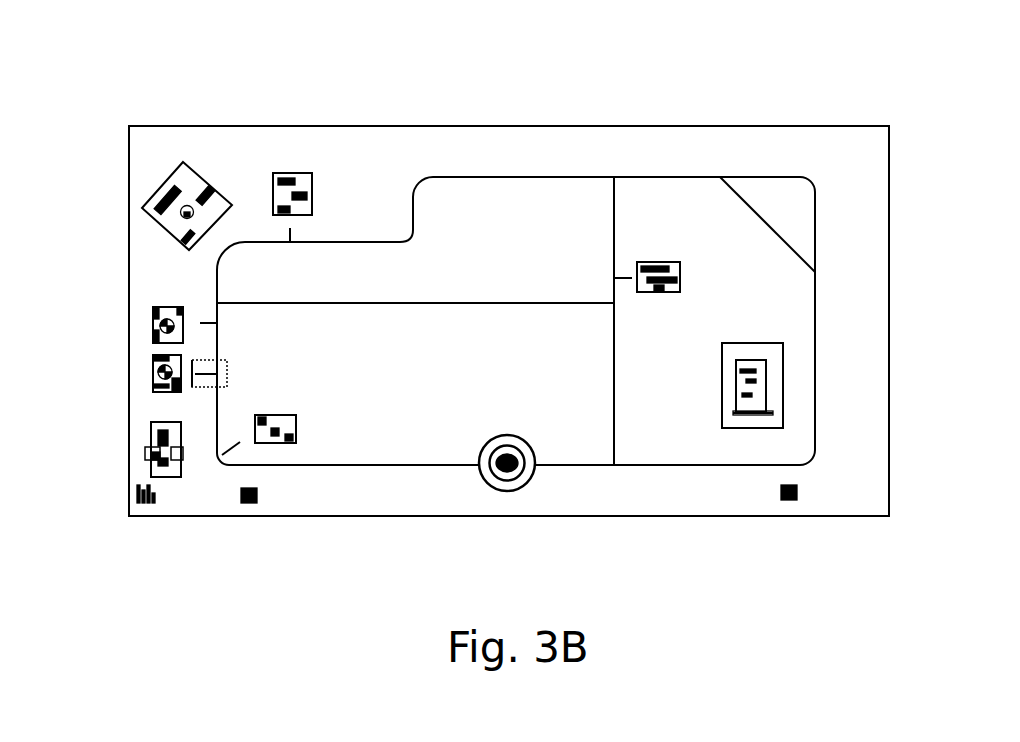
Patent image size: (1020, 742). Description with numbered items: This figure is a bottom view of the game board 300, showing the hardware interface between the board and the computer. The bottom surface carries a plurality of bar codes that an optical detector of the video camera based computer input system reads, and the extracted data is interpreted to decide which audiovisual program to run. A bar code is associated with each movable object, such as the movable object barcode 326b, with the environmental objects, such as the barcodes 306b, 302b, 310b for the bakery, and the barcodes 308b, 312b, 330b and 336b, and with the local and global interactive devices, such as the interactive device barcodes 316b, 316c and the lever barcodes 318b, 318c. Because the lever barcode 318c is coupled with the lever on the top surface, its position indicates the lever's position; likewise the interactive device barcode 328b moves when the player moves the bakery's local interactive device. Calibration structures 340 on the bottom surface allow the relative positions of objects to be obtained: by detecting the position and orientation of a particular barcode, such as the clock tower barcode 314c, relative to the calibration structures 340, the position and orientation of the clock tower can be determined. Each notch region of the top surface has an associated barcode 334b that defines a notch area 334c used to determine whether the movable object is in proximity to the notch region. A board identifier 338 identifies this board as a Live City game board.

The game board 300 is at (222, 118).
The environmental object barcode 302b is at (660, 262).
The environmental object barcode 306b is at (302, 178).
The function button 308b is at (279, 443).
The bakery barcode 310b is at (153, 310).
The channel down button 312b is at (153, 383).
The clock tower barcode 314c is at (160, 195).
The interactive device barcode 316b is at (783, 381).
The interactive device barcode 316c is at (758, 395).
The lever barcode 318b is at (158, 470).
The lever barcode 318c is at (150, 452).
The movable object barcode 326b is at (490, 470).
The interactive device barcode 328b is at (160, 324).
The channel down indicator 330b is at (160, 371).
The notch barcode 334b is at (198, 361).
The notch area 334c is at (230, 368).
The power indicator 336b is at (183, 212).
The board identifier 338 is at (124, 522).
The calibration structures 340 is at (242, 503).